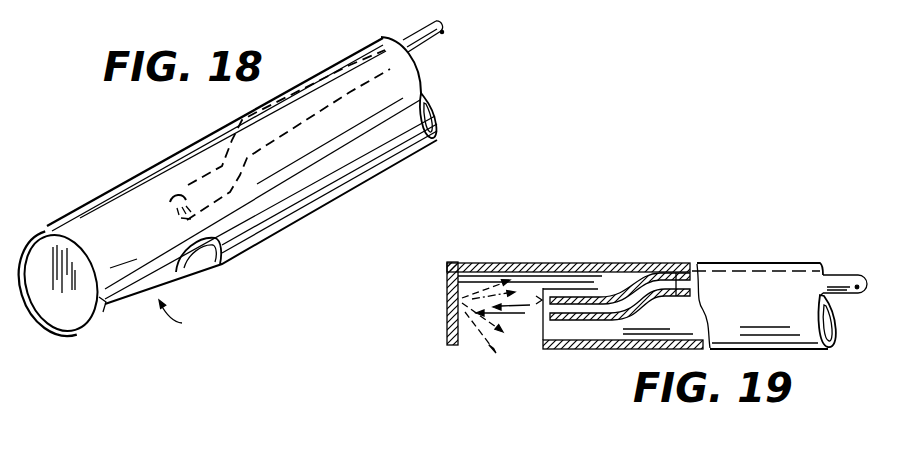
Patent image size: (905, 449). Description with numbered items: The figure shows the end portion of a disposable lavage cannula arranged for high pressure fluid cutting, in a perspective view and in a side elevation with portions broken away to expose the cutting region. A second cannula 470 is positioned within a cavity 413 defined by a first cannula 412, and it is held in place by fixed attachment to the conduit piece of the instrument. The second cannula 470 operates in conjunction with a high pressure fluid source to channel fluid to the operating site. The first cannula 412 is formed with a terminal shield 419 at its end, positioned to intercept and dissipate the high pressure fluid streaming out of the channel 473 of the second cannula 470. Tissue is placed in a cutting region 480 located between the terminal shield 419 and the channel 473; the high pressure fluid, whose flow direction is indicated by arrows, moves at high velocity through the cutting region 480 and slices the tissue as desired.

In FIG. 18, the first cannula 412 is at (328, 185).
In FIG. 19, the first cannula 412 is at (769, 294).
In FIG. 18, the cavity 413 is at (199, 258).
In FIG. 19, the cavity 413 is at (540, 328).
In FIG. 18, the terminal shield 419 is at (62, 310).
In FIG. 19, the terminal shield 419 is at (446, 313).
In FIG. 18, the second cannula 470 is at (437, 44).
In FIG. 19, the second cannula 470 is at (615, 288).
In FIG. 18, the channel 473 is at (157, 206).
In FIG. 19, the channel 473 is at (534, 298).
In FIG. 18, the cutting region 480 is at (193, 318).
In FIG. 19, the cutting region 480 is at (474, 352).